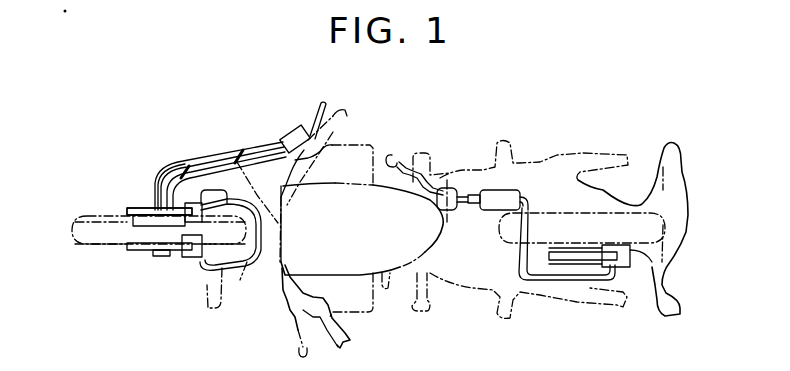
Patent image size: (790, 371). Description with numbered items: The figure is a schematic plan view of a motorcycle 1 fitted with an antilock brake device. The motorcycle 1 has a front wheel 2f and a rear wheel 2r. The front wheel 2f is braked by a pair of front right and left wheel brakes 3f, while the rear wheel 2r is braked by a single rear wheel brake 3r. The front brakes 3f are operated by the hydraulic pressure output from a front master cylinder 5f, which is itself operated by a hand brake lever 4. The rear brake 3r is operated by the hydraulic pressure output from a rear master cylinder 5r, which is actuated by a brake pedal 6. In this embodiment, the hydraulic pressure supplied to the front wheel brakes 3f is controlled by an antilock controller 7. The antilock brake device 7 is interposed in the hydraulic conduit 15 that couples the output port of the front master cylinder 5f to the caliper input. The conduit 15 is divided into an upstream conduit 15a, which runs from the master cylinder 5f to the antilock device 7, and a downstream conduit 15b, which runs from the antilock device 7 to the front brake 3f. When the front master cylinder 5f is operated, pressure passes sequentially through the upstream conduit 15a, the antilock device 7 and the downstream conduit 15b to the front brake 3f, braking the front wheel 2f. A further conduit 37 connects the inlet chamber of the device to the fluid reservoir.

The motorcycle 1 is at (471, 150).
The front wheel 2f is at (86, 247).
The rear wheel 2r is at (665, 227).
The front wheel brakes 3f is at (148, 203).
The rear wheel brake 3r is at (632, 262).
The brake lever 4 is at (318, 102).
The front master cylinder 5f is at (287, 139).
The rear master cylinder 5r is at (512, 186).
The brake pedal 6 is at (391, 155).
The antilock controller 7 is at (127, 217).
The hydraulic conduit 15 is at (240, 156).
The upstream conduit 15a is at (153, 142).
The downstream conduit 15b is at (261, 230).
The conduit 37 is at (201, 160).